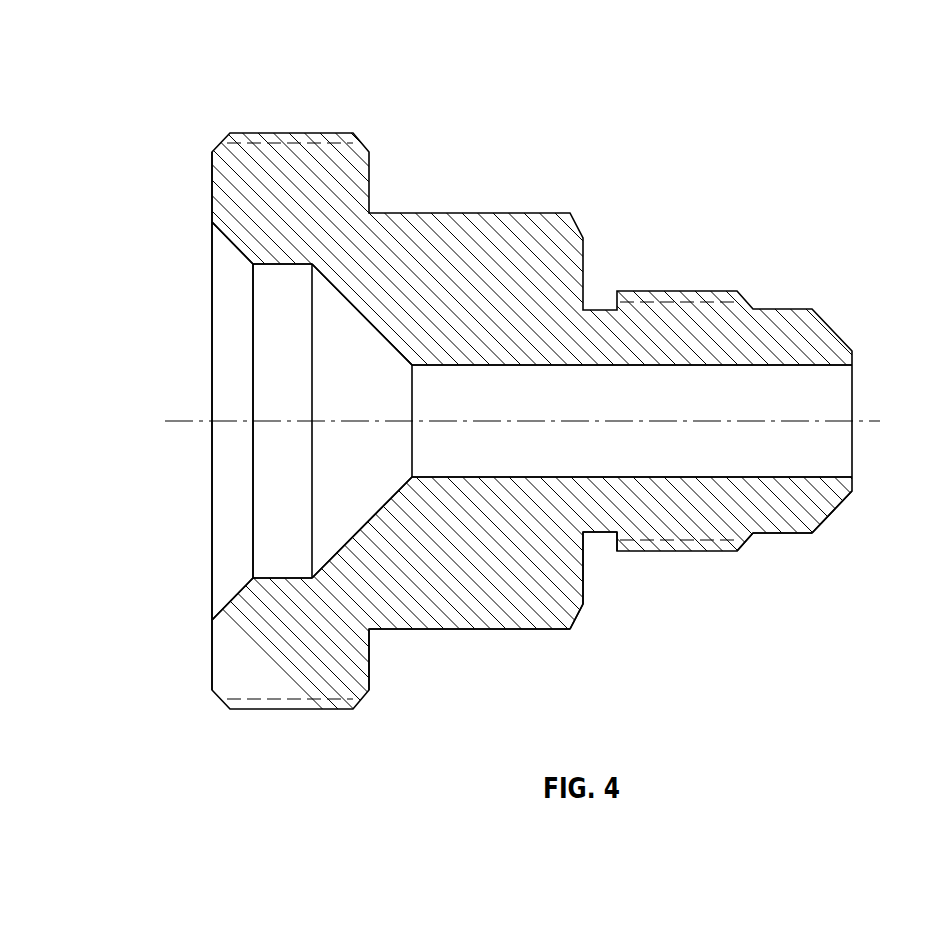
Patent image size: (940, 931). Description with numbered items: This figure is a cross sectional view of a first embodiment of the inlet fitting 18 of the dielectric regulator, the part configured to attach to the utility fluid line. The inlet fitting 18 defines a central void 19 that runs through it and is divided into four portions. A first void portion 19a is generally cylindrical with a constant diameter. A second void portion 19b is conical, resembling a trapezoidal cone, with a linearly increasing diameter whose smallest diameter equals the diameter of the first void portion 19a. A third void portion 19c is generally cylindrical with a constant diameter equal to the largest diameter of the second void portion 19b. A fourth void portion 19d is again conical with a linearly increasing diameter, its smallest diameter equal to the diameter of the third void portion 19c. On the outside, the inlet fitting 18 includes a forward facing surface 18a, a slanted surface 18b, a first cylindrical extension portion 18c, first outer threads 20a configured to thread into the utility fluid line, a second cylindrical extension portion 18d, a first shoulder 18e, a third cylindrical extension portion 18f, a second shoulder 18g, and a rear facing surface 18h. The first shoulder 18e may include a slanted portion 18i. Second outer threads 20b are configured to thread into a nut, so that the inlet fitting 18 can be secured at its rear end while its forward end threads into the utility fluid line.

The inlet fitting 18 is at (716, 236).
The forward facing surface 18a is at (853, 487).
The slanted surface 18b is at (827, 522).
The first cylindrical extension portion 18c is at (778, 535).
The second cylindrical extension portion 18d is at (600, 535).
The first shoulder 18e is at (585, 593).
The third cylindrical extension portion 18f is at (465, 630).
The second shoulder 18g is at (370, 655).
The rear facing surface 18h is at (212, 655).
The slanted portion 18i is at (580, 620).
The central void 19 is at (744, 396).
The first void portion 19a is at (842, 395).
The second void portion 19b is at (377, 373).
The third void portion 19c is at (278, 300).
The fourth void portion 19d is at (223, 263).
The first outer threads 20a is at (695, 553).
The second outer threads 20b is at (288, 710).